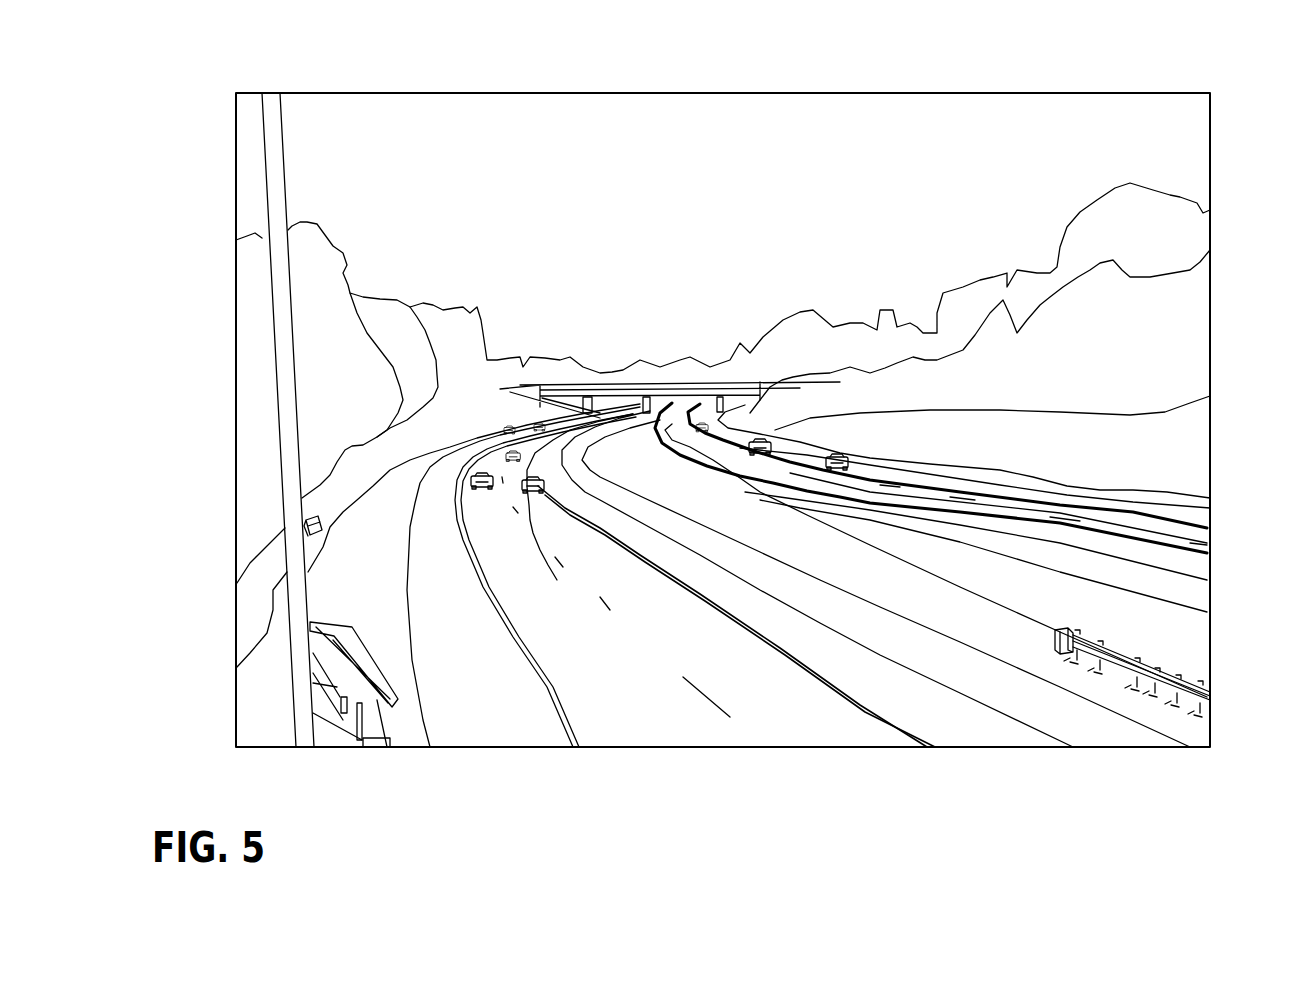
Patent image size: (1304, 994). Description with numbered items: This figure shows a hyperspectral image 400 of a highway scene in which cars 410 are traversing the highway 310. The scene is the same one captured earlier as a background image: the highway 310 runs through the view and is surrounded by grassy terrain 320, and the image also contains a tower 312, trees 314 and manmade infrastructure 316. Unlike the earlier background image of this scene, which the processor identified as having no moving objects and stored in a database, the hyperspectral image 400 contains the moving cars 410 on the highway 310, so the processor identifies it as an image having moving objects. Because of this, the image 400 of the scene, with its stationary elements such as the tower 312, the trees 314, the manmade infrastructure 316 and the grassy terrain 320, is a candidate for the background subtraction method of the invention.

The hyperspectral image 400 is at (205, 73).
The highway 310 is at (634, 374).
The tower 312 is at (268, 415).
The trees 314 is at (1148, 210).
The manmade infrastructure 316 is at (1192, 700).
The grassy terrain 320 is at (265, 577).
The cars 410 is at (483, 491).